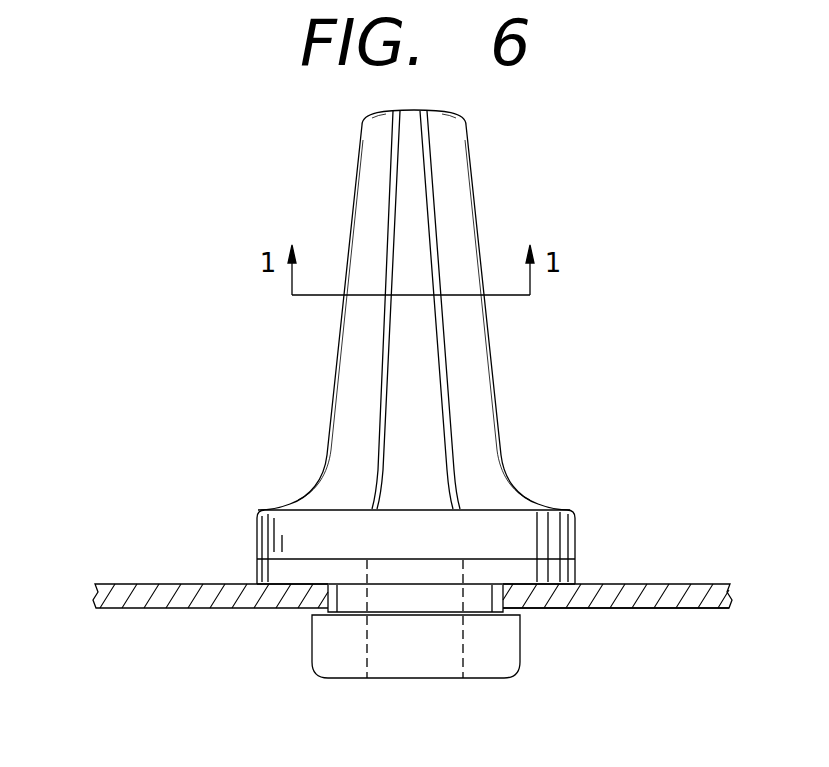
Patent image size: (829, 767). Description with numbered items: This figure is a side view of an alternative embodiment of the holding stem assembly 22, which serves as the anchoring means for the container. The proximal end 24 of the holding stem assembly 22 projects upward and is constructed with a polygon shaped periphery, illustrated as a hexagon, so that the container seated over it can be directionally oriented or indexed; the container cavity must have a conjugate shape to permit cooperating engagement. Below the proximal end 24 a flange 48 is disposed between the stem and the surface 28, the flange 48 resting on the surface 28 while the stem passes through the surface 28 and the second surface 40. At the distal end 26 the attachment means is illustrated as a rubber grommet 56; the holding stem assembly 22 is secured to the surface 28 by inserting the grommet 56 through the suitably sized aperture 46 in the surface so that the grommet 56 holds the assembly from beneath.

The holding stem assembly 22 is at (160, 368).
The proximal end 24 is at (491, 352).
The distal end 26 is at (521, 658).
The surface 28 is at (676, 582).
The second surface 40 is at (663, 609).
The aperture 46 is at (330, 597).
The flange 48 is at (568, 508).
The rubber grommet 56 is at (316, 669).